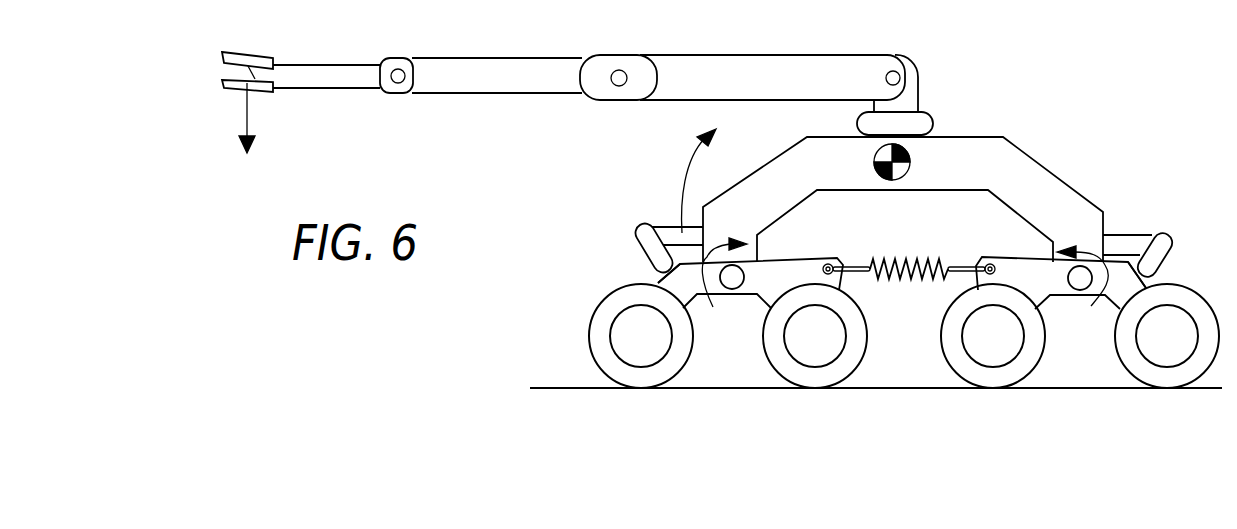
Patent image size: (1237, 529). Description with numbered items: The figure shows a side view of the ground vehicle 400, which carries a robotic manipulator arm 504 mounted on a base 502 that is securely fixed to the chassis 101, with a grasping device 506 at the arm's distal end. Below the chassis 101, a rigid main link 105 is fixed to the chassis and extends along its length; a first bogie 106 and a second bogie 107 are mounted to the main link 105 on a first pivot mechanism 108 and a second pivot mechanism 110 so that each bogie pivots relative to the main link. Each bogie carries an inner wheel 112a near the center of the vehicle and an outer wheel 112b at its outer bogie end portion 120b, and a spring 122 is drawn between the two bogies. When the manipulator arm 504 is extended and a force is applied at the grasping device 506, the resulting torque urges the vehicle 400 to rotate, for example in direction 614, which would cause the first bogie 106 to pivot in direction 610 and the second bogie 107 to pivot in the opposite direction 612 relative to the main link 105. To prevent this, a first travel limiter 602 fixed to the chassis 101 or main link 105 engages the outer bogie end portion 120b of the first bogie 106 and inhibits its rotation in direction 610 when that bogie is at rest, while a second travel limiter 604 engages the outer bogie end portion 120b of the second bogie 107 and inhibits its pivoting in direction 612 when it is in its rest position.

The ground vehicle 400 is at (1105, 140).
The chassis 101 is at (972, 134).
The main link 105 is at (979, 173).
The first bogie 106 is at (822, 285).
The second bogie 107 is at (1027, 285).
The first pivot mechanism 108 is at (739, 287).
The second pivot mechanism 110 is at (1068, 283).
The inner wheel 112a is at (766, 362).
The outer wheel 112b is at (592, 326).
The outer bogie end portion 120b is at (660, 282).
The spring 122 is at (914, 283).
The base 502 is at (913, 93).
The robotic manipulator arm 504 is at (536, 91).
The grasping device 506 is at (242, 57).
The first travel limiter structure 602 is at (645, 262).
The second travel limiter 604 is at (1175, 261).
The rotation or pivot direction 610 is at (724, 282).
The rotation or pivot direction 612 is at (1082, 283).
The direction 614 is at (712, 181).